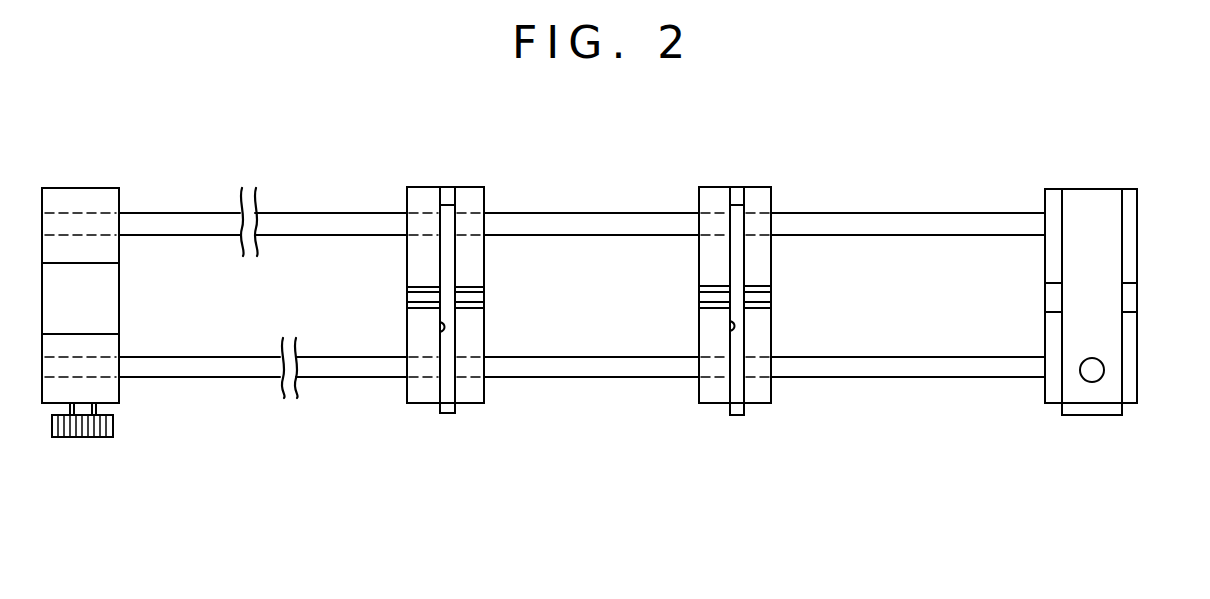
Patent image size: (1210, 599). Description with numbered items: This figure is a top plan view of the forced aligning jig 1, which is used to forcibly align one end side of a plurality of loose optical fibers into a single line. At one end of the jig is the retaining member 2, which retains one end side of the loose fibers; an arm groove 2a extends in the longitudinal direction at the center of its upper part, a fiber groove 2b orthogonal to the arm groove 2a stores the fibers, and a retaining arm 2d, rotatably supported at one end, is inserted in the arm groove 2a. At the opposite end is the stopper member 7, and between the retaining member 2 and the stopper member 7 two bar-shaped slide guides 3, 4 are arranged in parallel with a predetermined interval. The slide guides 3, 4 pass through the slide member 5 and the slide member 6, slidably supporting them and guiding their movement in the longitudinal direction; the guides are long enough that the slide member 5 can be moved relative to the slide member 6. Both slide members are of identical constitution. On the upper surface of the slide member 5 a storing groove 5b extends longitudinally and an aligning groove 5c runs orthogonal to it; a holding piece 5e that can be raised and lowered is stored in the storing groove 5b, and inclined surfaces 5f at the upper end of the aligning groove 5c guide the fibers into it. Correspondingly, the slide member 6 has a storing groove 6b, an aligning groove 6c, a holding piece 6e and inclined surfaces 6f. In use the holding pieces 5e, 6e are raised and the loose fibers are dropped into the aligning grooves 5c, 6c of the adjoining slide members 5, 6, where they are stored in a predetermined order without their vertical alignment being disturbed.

The forced aligning jig 1 is at (853, 178).
The retaining member 2 is at (1102, 267).
The arm groove 2a is at (1113, 340).
The fiber groove 2b is at (1052, 298).
The retaining arm 2d is at (1113, 262).
The slide guide 3 is at (173, 222).
The slide guide 4 is at (188, 365).
The slide member 5 is at (450, 299).
The storing groove 5b is at (440, 329).
The aligning groove 5c is at (484, 297).
The holding piece 5e is at (449, 415).
The inclined surfaces 5f is at (426, 288).
The slide member 6 is at (741, 336).
The storing groove 6b is at (735, 326).
The aligning groove 6c is at (771, 297).
The holding piece 6e is at (738, 417).
The inclined surfaces 6f is at (715, 290).
The stopper member 7 is at (99, 195).